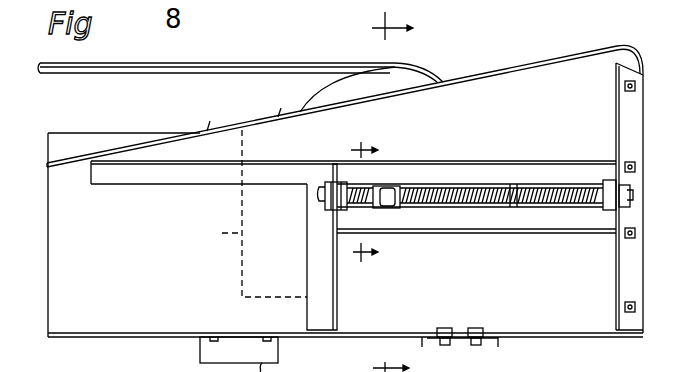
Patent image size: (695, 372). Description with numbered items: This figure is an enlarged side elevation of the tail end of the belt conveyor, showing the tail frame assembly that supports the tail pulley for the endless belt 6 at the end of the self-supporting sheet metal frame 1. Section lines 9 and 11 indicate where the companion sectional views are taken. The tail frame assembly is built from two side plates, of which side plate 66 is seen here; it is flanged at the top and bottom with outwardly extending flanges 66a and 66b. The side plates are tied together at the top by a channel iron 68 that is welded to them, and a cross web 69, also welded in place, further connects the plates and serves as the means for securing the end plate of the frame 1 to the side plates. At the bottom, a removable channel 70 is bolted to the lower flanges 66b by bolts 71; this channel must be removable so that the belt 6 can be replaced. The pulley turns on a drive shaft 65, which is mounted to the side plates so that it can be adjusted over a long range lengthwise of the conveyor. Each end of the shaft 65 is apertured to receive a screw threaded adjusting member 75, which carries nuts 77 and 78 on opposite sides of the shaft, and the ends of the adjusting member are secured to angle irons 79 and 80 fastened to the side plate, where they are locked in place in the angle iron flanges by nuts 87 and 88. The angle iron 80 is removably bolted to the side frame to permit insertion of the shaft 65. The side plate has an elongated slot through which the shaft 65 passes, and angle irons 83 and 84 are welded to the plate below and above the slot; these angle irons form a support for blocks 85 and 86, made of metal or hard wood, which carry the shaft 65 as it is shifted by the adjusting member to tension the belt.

The sheet metal frame 1 is at (50, 143).
The endless belt 6 is at (238, 63).
The section line 9- 9 is at (358, 202).
The section line 11- 11 is at (380, 192).
The drive shaft 65 is at (387, 185).
The side plate 66 is at (577, 325).
The outwardly extending flange 66a is at (552, 61).
The outwardly extending flange 66b is at (546, 337).
The channel iron 68 is at (245, 124).
The cross web 69 is at (254, 213).
The removable channel 70 is at (425, 346).
The bolt 71 is at (472, 346).
The screw threaded adjusting member 75 is at (436, 200).
The nut 77 is at (380, 211).
The nut 78 is at (400, 210).
The angle iron 79 is at (313, 229).
The angle iron 80 is at (617, 258).
The angle iron 83 is at (493, 234).
The angle iron 84 is at (459, 163).
The block 85 is at (528, 221).
The block 86 is at (503, 171).
The nut 87 is at (346, 217).
The nut 88 is at (617, 212).